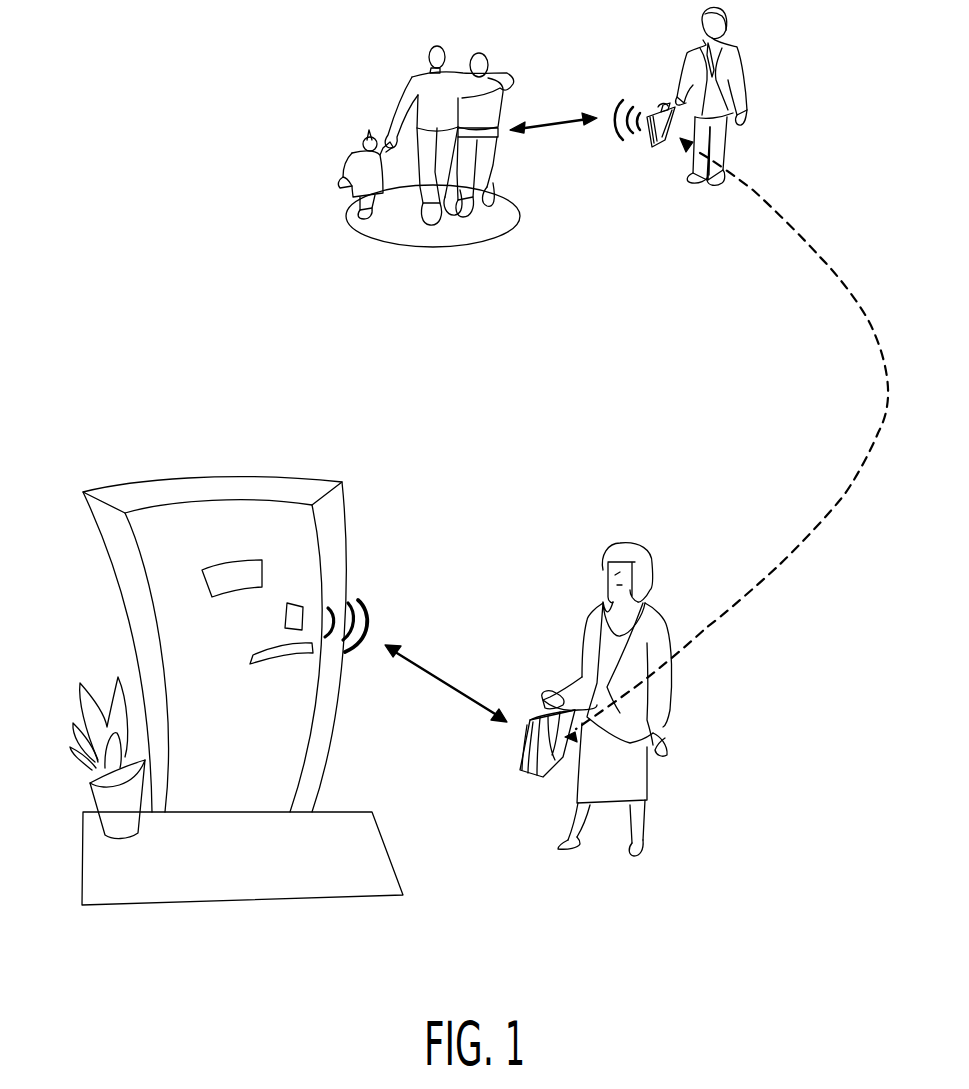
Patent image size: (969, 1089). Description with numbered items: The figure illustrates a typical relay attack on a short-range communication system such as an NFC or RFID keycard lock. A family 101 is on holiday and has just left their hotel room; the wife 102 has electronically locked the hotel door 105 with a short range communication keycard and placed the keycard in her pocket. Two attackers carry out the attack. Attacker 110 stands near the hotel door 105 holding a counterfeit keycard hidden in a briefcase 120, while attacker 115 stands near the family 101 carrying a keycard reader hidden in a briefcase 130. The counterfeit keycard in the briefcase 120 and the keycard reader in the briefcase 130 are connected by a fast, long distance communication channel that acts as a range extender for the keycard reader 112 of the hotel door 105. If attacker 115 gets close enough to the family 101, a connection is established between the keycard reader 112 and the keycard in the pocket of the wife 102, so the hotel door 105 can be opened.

The family 101 is at (397, 85).
The wife 102 is at (497, 168).
The hotel door 105 is at (183, 487).
The attacker 110 is at (630, 543).
The keycard reader 112 is at (300, 607).
The attacker 115 is at (748, 85).
The briefcase 120 is at (520, 763).
The briefcase 130 is at (657, 110).